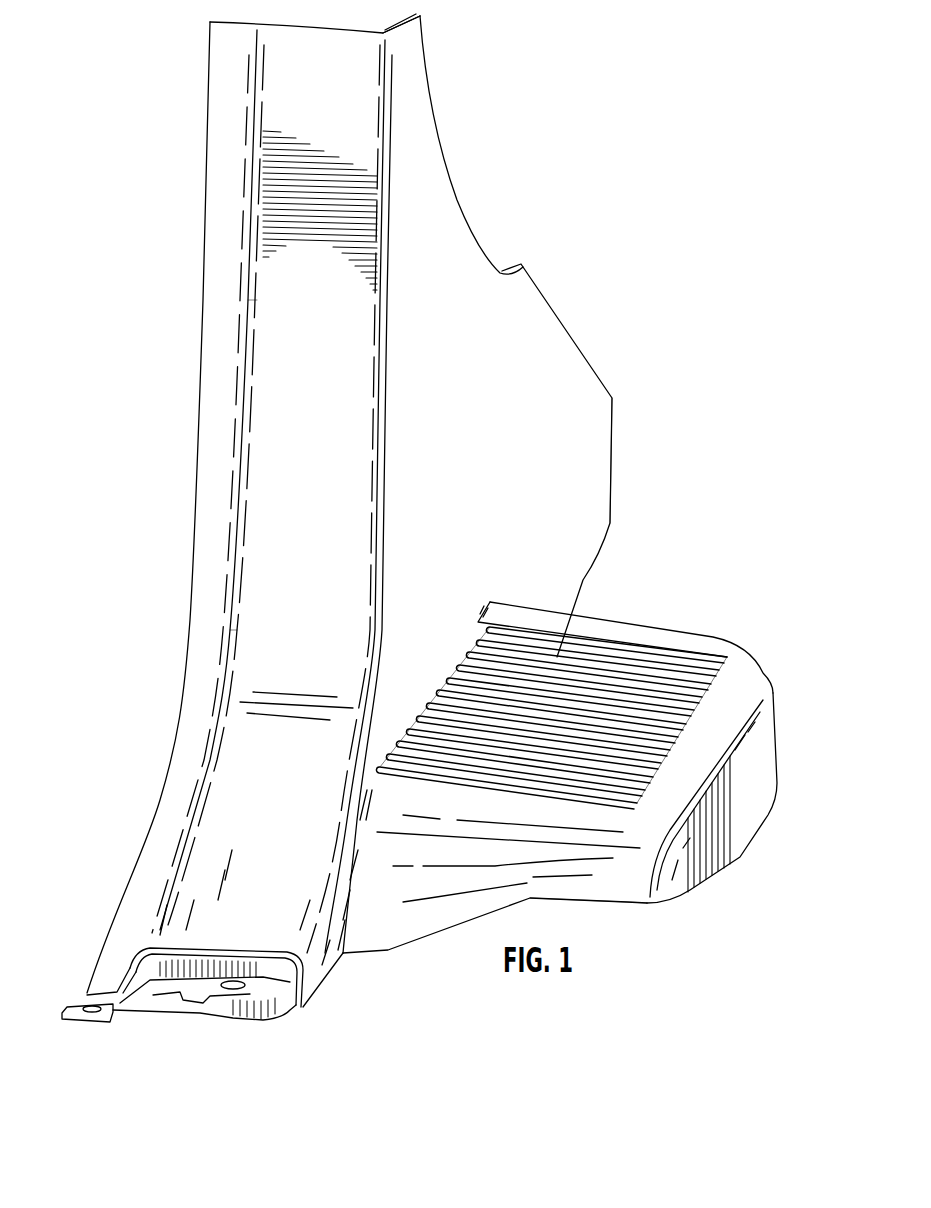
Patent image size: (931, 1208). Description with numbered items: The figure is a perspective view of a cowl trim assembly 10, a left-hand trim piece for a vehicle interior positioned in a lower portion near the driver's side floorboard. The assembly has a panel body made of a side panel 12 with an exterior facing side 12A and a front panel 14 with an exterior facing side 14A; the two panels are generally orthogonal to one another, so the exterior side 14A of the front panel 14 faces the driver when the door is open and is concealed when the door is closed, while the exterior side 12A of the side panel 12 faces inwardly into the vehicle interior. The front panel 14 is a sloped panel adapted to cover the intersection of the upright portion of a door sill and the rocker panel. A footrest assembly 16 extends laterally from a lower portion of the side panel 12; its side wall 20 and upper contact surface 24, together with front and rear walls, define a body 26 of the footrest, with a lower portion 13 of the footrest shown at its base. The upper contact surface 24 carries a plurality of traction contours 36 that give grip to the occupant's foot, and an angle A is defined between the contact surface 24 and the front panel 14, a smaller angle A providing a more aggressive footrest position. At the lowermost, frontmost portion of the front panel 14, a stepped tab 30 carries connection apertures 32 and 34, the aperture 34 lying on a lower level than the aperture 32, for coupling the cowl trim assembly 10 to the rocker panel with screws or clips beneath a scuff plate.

The cowl trim assembly 10 is at (108, 202).
The side panel 12 is at (528, 360).
The exterior facing side of side panel 12A is at (482, 431).
The lower portion 13 is at (627, 877).
The front panel 14 is at (272, 437).
The exterior facing side of front panel 14A is at (306, 531).
The footrest assembly 16 is at (663, 627).
The side wall 20 is at (757, 797).
The upper contact surface 24 is at (707, 698).
The body of the footrest 26 is at (777, 740).
The tab 30 is at (273, 1012).
The connection aperture 32 is at (235, 981).
The connection aperture 34 is at (87, 1003).
The traction contours 36 is at (595, 640).
The angle A is at (430, 687).